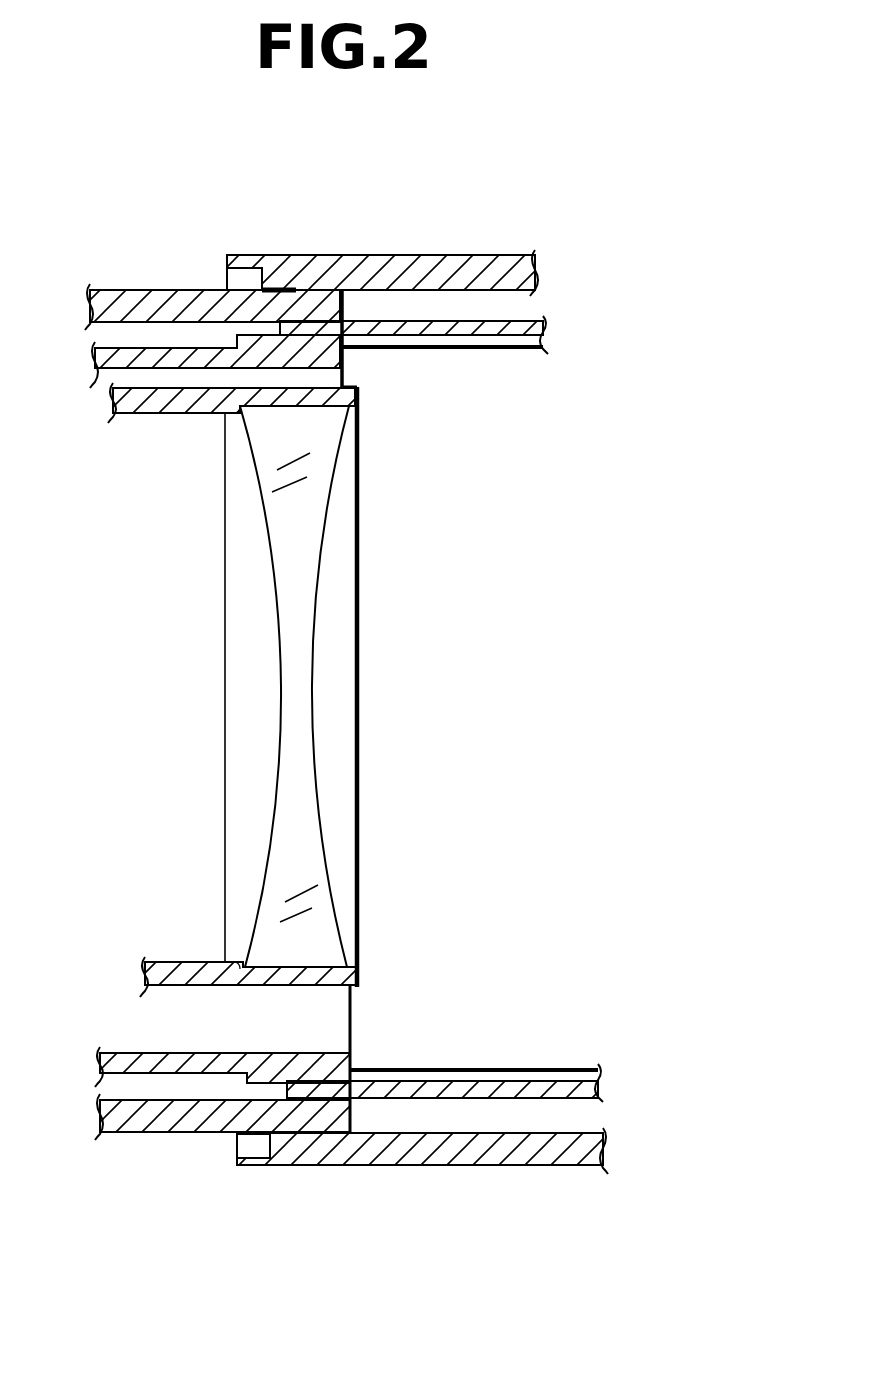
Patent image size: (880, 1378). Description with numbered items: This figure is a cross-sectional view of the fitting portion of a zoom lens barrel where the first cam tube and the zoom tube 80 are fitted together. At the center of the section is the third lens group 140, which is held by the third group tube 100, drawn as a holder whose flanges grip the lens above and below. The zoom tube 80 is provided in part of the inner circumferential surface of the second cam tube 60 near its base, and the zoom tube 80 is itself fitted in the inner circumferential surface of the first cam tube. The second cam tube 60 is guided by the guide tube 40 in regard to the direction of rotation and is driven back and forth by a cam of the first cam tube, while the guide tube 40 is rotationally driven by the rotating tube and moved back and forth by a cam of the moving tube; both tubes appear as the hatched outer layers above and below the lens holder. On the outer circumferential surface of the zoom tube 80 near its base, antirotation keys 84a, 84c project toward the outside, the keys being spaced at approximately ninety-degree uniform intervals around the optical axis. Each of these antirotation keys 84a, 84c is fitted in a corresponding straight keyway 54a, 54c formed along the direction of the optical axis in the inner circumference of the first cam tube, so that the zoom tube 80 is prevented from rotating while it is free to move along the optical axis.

The guide tube 40 is at (508, 1168).
The second cam tube 60 is at (178, 1128).
The zoom tube 80 is at (112, 368).
The antirotation key 84a is at (295, 1070).
The antirotation key 84c is at (347, 352).
The straight keyway 54a is at (557, 1077).
The straight keyway 54c is at (510, 340).
The third group tube 100 is at (283, 977).
The third lens group 140 is at (310, 825).